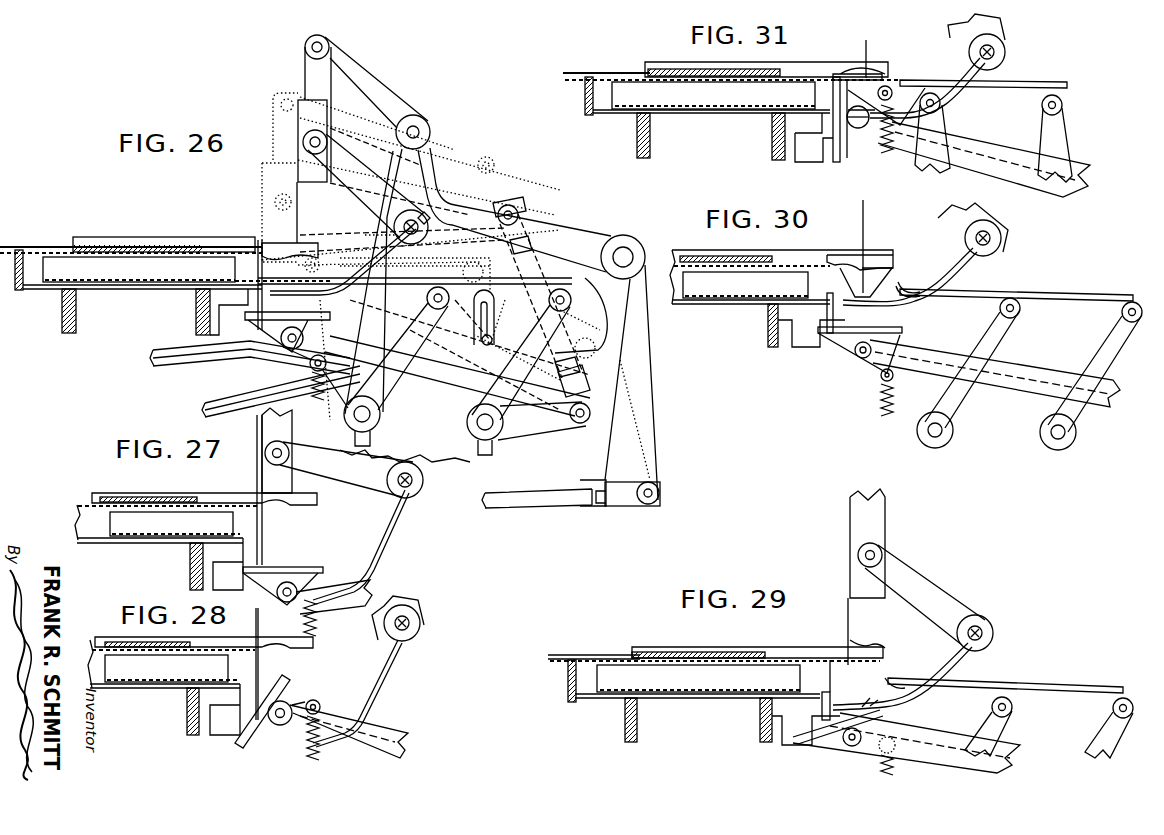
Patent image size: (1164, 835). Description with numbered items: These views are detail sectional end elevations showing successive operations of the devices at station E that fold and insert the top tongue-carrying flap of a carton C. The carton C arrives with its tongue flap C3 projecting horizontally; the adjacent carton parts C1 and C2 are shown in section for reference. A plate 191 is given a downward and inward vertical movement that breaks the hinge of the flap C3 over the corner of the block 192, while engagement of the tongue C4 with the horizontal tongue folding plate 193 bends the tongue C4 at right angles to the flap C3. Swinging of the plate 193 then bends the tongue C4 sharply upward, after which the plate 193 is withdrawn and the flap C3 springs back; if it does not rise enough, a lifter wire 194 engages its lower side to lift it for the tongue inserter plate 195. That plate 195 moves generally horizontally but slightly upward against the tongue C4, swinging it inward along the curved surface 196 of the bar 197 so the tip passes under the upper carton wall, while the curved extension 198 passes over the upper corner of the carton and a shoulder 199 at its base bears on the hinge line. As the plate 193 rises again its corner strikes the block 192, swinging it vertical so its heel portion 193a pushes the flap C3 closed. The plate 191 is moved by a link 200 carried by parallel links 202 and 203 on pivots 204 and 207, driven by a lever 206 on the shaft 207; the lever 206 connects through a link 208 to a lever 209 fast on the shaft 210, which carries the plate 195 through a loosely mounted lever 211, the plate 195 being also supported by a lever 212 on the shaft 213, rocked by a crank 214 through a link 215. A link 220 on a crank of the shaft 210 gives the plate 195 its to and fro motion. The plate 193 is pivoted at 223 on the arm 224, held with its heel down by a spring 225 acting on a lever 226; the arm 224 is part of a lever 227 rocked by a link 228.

In FIG. 26, the carton C is at (48, 246).
In FIG. 31, the carton C is at (618, 73).
In FIG. 30, the carton C is at (673, 260).
In FIG. 29, the carton C is at (612, 654).
In FIG. 27, the carton C is at (88, 500).
In FIG. 28, the carton C is at (110, 688).
In FIG. 31, the carriage plate C1 is at (575, 72).
In FIG. 31, the carriage end block C2 is at (585, 91).
In FIG. 26, the tongue flap C3 is at (245, 314).
In FIG. 29, the tongue flap C3 is at (832, 690).
In FIG. 27, the tongue flap C3 is at (262, 544).
In FIG. 29, the tongue C4 is at (882, 682).
In FIG. 27, the tongue C4 is at (285, 568).
In FIG. 28, the tongue C4 is at (283, 688).
In FIG. 26, the plate 191 is at (296, 229).
In FIG. 31, the plate 191 is at (870, 60).
In FIG. 30, the plate 191 is at (870, 215).
In FIG. 29, the plate 191 is at (853, 634).
In FIG. 27, the plate 191 is at (262, 526).
In FIG. 28, the plate 191 is at (263, 673).
In FIG. 31, the block 192 is at (833, 140).
In FIG. 30, the block 192 is at (818, 326).
In FIG. 29, the block 192 is at (757, 729).
In FIG. 27, the block 192 is at (155, 562).
In FIG. 31, the tongue folding plate 193 is at (855, 155).
In FIG. 30, the tongue folding plate 193 is at (818, 335).
In FIG. 29, the tongue folding plate 193 is at (800, 740).
In FIG. 27, the tongue folding plate 193 is at (283, 601).
In FIG. 28, the tongue folding plate 193 is at (233, 736).
In FIG. 29, the heel portion 193a is at (867, 710).
In FIG. 31, the lifter wire 194 is at (927, 88).
In FIG. 30, the lifter wire 194 is at (953, 270).
In FIG. 29, the lifter wire 194 is at (948, 667).
In FIG. 27, the lifter wire 194 is at (390, 539).
In FIG. 28, the lifter wire 194 is at (387, 674).
In FIG. 31, the tongue inserter plate 195 is at (1007, 79).
In FIG. 30, the tongue inserter plate 195 is at (1040, 288).
In FIG. 29, the tongue inserter plate 195 is at (1050, 683).
In FIG. 30, the curved surface 196 is at (847, 260).
In FIG. 30, the bar 197 is at (870, 256).
In FIG. 30, the curved extension 198 is at (903, 279).
In FIG. 31, the shoulder 199 is at (837, 80).
In FIG. 26, the link 200 is at (305, 80).
In FIG. 26, the parallel link 202 is at (382, 80).
In FIG. 26, the parallel link 203 is at (398, 144).
In FIG. 31, the parallel link 203 is at (1000, 48).
In FIG. 30, the parallel link 203 is at (973, 229).
In FIG. 29, the parallel link 203 is at (938, 581).
In FIG. 27, the parallel link 203 is at (358, 491).
In FIG. 28, the parallel link 203 is at (385, 642).
In FIG. 26, the pivot 204 is at (431, 128).
In FIG. 26, the lever 206 is at (490, 200).
In FIG. 26, the shaft 207 is at (418, 222).
In FIG. 26, the link 208 is at (585, 340).
In FIG. 26, the lever 209 is at (555, 425).
In FIG. 26, the shaft 210 is at (497, 442).
In FIG. 26, the lever 211 is at (526, 330).
In FIG. 31, the lever 211 is at (1070, 126).
In FIG. 30, the lever 211 is at (1100, 329).
In FIG. 29, the lever 211 is at (1108, 714).
In FIG. 26, the lever 212 is at (403, 387).
In FIG. 31, the lever 212 is at (947, 118).
In FIG. 30, the lever 212 is at (1007, 333).
In FIG. 29, the lever 212 is at (1010, 718).
In FIG. 26, the shaft 213 is at (382, 422).
In FIG. 26, the crank 214 is at (290, 381).
In FIG. 26, the link 215 is at (185, 367).
In FIG. 26, the link 220 is at (293, 403).
In FIG. 28, the pivot 223 is at (283, 725).
In FIG. 26, the arm 224 is at (458, 402).
In FIG. 31, the arm 224 is at (995, 144).
In FIG. 30, the arm 224 is at (937, 344).
In FIG. 29, the arm 224 is at (1012, 741).
In FIG. 27, the arm 224 is at (373, 591).
In FIG. 28, the arm 224 is at (380, 721).
In FIG. 29, the spring 225 is at (877, 762).
In FIG. 29, the lever 226 is at (893, 740).
In FIG. 26, the lever 227 is at (655, 399).
In FIG. 26, the link 228 is at (538, 491).